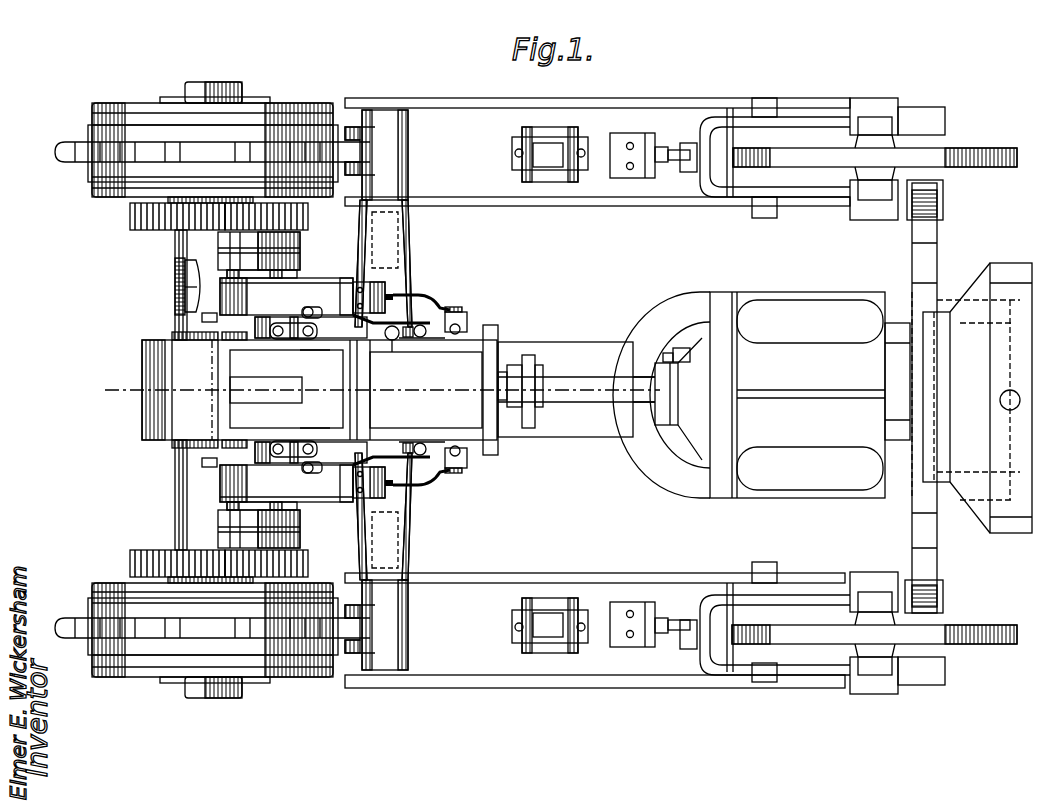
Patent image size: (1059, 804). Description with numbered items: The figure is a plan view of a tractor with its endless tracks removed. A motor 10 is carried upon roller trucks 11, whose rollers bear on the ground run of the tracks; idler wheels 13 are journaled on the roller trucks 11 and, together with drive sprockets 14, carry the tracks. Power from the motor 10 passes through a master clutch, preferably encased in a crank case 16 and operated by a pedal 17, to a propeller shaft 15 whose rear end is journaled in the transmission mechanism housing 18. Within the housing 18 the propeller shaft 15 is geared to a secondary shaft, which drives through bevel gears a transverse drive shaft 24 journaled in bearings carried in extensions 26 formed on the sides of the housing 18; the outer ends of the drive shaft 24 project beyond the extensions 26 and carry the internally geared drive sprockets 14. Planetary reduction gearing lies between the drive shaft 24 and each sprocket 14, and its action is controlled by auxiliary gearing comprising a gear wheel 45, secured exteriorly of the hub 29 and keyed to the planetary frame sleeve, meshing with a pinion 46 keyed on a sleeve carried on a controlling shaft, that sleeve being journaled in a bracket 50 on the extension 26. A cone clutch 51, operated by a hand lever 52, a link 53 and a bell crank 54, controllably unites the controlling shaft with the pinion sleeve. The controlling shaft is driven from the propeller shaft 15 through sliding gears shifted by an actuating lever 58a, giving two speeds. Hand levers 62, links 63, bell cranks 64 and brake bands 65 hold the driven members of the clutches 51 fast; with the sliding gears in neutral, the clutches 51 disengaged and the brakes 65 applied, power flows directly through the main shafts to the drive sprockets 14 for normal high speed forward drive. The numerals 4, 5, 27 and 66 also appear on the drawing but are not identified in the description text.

The bearing 4 is at (209, 398).
The casing 5 is at (142, 392).
The motor 10 is at (761, 395).
The roller trucks 11 is at (597, 393).
The idler wheels 13 is at (874, 387).
The drive sprockets 14 is at (359, 396).
The propeller shaft 15 is at (576, 389).
The crank case 16 is at (667, 399).
The pedal 17 is at (678, 350).
The transmission mechanism housing 18 is at (302, 390).
The transverse drive shaft 24 is at (185, 288).
The extensions 26 is at (167, 390).
The axle shaft 27 is at (95, 620).
The hub 29 is at (146, 118).
The gear wheel 45 is at (130, 219).
The pinion 46 is at (308, 219).
The bracket 50 is at (259, 390).
The cone clutch 51 is at (345, 283).
The hand lever 52 is at (420, 337).
The link 53 is at (378, 447).
The bell crank 54 is at (296, 442).
The actuating lever 58a is at (392, 341).
The hand levers 62 is at (467, 320).
The links 63 is at (432, 496).
The bell cranks 64 is at (395, 470).
The brake bands 65 is at (286, 317).
The clutch bar 66 is at (293, 390).